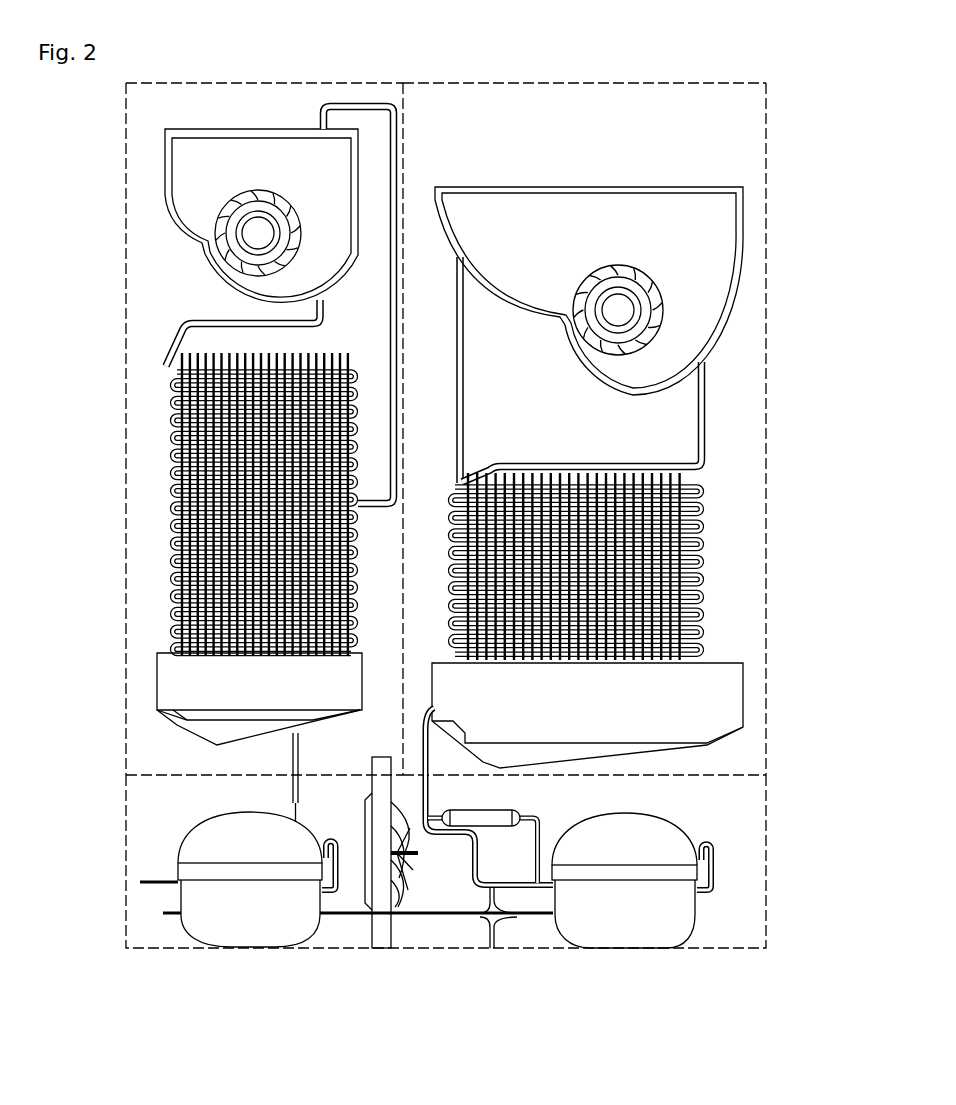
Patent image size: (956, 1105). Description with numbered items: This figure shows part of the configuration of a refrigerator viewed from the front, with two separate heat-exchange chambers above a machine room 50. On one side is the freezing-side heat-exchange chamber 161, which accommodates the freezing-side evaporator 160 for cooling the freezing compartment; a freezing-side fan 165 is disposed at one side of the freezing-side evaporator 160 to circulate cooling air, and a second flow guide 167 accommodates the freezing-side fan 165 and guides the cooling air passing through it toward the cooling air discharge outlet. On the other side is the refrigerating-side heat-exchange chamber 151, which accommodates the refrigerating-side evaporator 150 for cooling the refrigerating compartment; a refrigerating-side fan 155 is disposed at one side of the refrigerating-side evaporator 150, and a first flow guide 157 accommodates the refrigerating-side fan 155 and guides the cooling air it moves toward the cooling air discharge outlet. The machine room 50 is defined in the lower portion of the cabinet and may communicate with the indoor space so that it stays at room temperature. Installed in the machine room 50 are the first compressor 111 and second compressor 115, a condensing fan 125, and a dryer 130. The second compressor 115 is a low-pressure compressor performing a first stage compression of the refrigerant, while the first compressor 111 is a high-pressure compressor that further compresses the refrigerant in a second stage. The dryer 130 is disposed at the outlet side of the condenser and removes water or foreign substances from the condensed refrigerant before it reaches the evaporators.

The machine room 50 is at (737, 833).
The first compressor 111 is at (623, 921).
The second compressor 115 is at (248, 921).
The condensing fan 125 is at (410, 853).
The dryer 130 is at (500, 818).
The refrigerating-side evaporator 150 is at (658, 562).
The refrigerating-side heat-exchange chamber 151 is at (737, 462).
The refrigerating-side fan 155 is at (648, 305).
The first flow guide 157 is at (740, 232).
The freezing-side evaporator 160 is at (186, 473).
The freezing-side heat-exchange chamber 161 is at (147, 528).
The freezing-side fan 165 is at (230, 213).
The second flow guide 167 is at (167, 172).